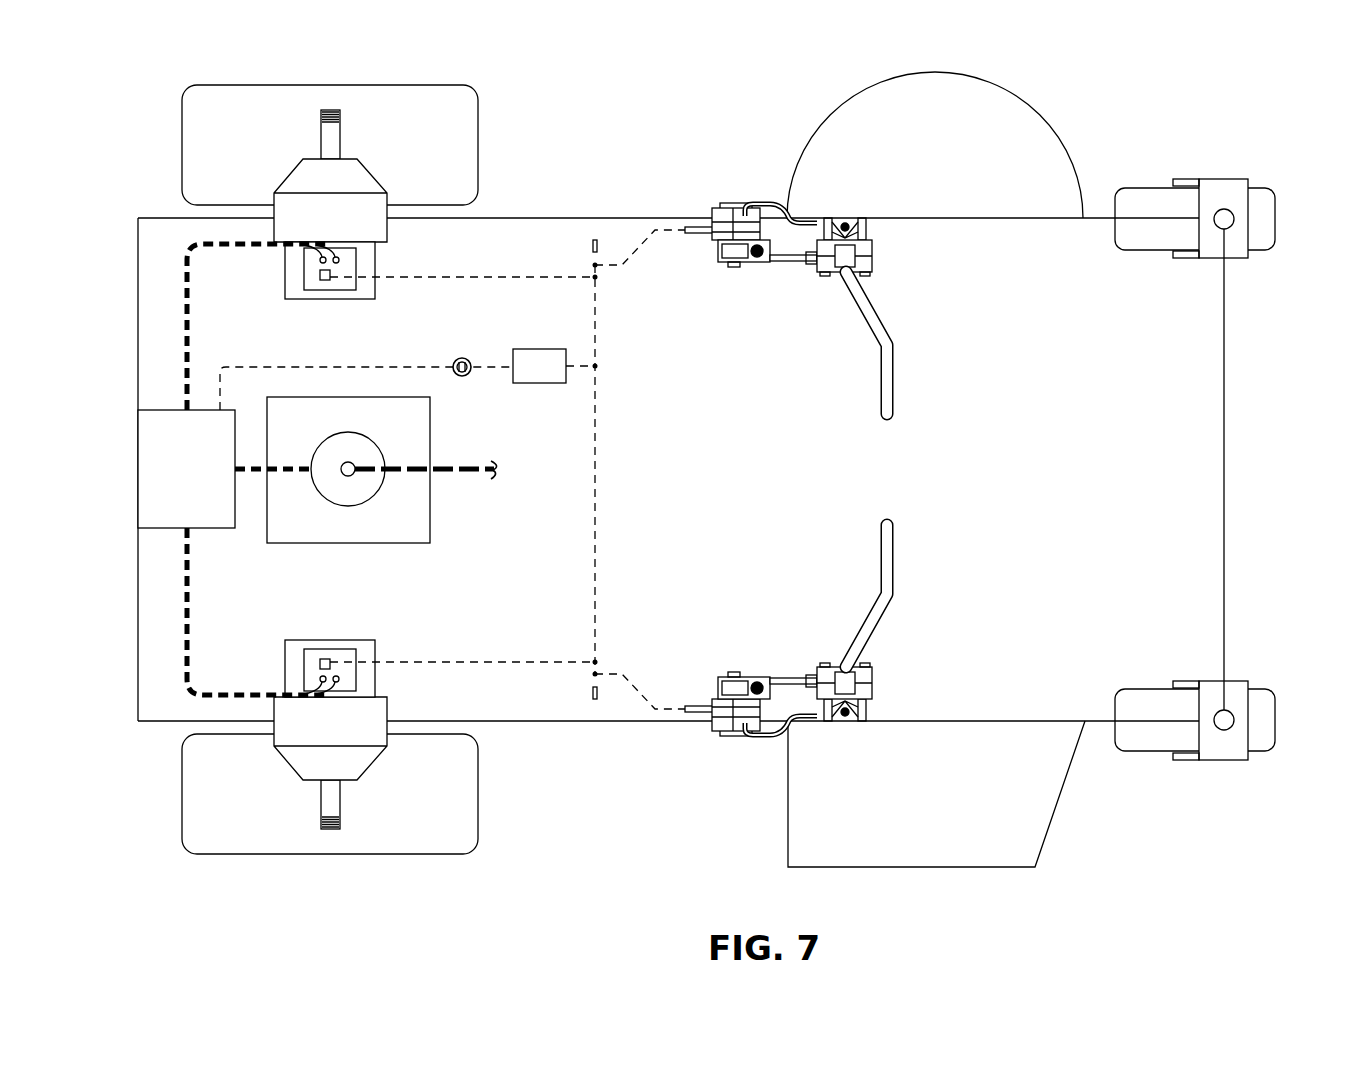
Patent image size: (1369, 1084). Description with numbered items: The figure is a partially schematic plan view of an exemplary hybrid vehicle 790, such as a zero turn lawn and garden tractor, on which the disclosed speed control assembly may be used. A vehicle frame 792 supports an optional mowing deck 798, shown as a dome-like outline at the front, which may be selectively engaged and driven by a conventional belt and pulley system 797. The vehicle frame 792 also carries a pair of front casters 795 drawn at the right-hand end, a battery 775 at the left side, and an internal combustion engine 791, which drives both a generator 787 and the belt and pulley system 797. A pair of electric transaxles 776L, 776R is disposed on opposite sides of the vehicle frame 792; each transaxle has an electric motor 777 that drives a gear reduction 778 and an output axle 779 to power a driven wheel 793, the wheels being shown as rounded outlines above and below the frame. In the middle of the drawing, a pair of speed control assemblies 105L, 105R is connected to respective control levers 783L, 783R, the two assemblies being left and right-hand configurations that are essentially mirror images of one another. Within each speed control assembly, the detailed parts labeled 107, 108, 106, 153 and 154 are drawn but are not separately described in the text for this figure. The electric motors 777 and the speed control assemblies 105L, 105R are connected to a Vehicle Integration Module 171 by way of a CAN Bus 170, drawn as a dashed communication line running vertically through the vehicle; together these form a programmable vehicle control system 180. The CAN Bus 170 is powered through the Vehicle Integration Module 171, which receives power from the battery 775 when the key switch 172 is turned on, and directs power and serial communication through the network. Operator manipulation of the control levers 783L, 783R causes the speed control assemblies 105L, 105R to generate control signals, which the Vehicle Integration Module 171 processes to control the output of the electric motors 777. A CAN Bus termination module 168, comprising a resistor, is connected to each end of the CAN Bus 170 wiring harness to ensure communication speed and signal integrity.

The hybrid vehicle 790 is at (122, 106).
The mowing deck 798 is at (935, 72).
The programmable vehicle control system 180 is at (1003, 470).
The front casters 795 is at (1275, 219).
The driven wheel 793 is at (283, 85).
The left electric transaxle 776L is at (258, 173).
The right electric transaxle 776R is at (256, 767).
The output axle 779 is at (340, 132).
The gear reduction 778 is at (374, 178).
The electric motor 777 is at (367, 300).
The battery 775 is at (208, 484).
The internal combustion engine 791 is at (420, 534).
The generator 787 is at (368, 448).
The belt and pulley system 797 is at (478, 462).
The key switch 172 is at (457, 360).
The Vehicle Integration Module 171 is at (540, 349).
The CAN Bus 170 is at (596, 487).
The CAN Bus termination module 168 is at (592, 244).
The control linkage 154 is at (640, 243).
The steering actuator 107 is at (704, 259).
The hydraulic line 153 is at (762, 205).
The actuator rod 108 is at (790, 262).
The lever hub 106 is at (880, 256).
The left speed control assembly 105L is at (758, 298).
The right speed control assembly 105R is at (755, 643).
The left control lever 783L is at (894, 391).
The right control lever 783R is at (894, 548).
The vehicle frame 792 is at (580, 217).